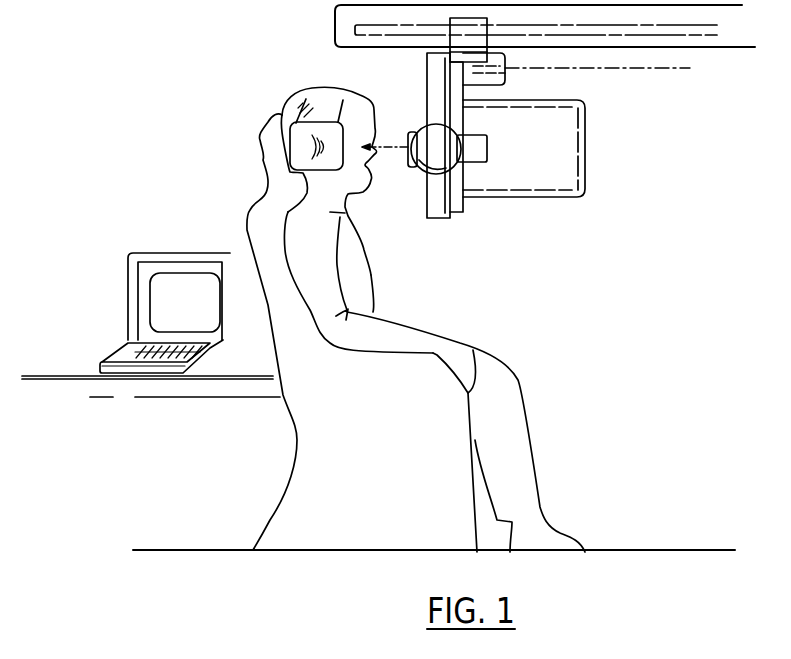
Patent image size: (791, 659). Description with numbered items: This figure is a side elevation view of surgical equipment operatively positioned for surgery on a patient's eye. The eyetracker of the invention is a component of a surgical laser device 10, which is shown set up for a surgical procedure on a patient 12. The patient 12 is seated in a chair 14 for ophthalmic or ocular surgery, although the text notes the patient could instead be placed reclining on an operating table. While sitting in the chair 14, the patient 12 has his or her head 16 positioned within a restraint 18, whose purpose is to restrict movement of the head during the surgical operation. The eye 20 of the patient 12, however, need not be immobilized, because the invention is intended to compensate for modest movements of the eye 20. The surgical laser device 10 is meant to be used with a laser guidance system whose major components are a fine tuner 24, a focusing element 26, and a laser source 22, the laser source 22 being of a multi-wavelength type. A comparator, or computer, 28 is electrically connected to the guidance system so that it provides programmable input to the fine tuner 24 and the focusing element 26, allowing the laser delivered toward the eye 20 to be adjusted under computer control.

The surgical laser device 10 is at (609, 153).
The patient 12 is at (357, 253).
The chair 14 is at (265, 243).
The head 16 is at (343, 108).
The restraint 18 is at (297, 128).
The eye 20 is at (366, 165).
The laser source 22 is at (723, 89).
The fine tuner 24 is at (506, 80).
The focusing element 26 is at (430, 130).
The comparator (computer) 28 is at (130, 307).